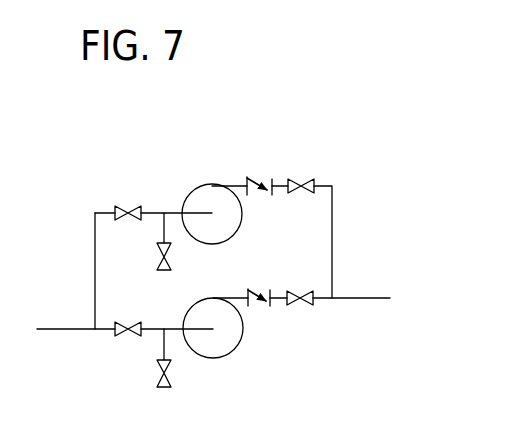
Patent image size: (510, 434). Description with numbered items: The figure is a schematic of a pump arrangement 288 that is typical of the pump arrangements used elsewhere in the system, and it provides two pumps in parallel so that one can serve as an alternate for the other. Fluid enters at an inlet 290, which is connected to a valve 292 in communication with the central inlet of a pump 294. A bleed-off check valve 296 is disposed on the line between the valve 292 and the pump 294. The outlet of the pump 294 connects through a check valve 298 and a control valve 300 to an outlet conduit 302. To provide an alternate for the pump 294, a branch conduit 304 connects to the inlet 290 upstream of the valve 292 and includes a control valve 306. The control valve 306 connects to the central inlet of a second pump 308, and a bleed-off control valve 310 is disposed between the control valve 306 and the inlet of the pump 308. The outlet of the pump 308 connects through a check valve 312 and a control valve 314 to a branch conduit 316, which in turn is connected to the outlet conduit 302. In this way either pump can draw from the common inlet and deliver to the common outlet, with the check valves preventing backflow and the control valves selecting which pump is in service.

The pump arrangement 288 is at (228, 137).
The inlet 290 is at (80, 331).
The valve 292 is at (125, 328).
The pump 294 is at (205, 298).
The bleed-off check valve 296 is at (172, 373).
The check valve 298 is at (255, 306).
The control valve 300 is at (298, 299).
The outlet conduit 302 is at (383, 298).
The branch conduit 304 is at (95, 272).
The control valve 306 is at (128, 212).
The pump 308 is at (202, 185).
The bleed-off control valve 310 is at (172, 257).
The check valve 312 is at (255, 193).
The control valve 314 is at (301, 186).
The branch conduit 316 is at (332, 260).